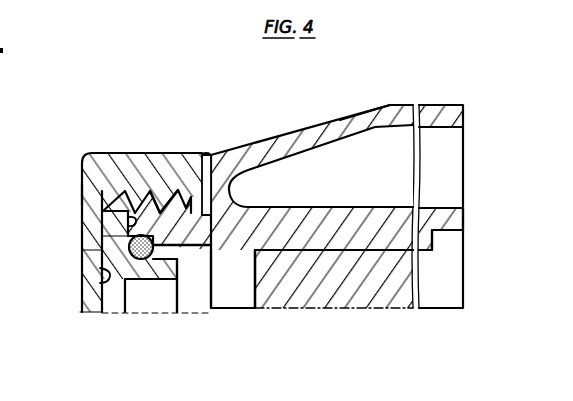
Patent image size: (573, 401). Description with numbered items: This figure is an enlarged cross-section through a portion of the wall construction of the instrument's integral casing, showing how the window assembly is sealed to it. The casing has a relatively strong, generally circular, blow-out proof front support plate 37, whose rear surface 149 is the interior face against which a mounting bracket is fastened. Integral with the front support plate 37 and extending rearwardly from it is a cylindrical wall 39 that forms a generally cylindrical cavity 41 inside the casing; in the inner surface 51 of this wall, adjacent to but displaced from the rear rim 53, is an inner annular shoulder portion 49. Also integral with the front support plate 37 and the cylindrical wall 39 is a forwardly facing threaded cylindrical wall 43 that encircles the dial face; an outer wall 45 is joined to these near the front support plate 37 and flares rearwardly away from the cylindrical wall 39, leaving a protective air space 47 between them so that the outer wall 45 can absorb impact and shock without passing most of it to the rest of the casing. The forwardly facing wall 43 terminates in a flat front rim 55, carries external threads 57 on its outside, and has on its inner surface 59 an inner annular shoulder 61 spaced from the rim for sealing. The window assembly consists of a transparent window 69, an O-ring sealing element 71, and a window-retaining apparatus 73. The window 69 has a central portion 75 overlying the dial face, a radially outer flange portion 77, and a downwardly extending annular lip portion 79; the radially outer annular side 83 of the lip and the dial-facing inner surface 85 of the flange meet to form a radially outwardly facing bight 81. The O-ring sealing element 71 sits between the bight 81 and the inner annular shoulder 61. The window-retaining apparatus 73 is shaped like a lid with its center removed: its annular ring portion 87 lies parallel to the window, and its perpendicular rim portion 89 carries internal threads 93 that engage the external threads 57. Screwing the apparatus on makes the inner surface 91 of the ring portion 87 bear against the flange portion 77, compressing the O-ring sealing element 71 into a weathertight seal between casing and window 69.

The front support plate 37 is at (272, 302).
The cylindrical wall 39 is at (305, 207).
The cavity 41 is at (364, 292).
The threaded cylindrical wall 43 is at (137, 190).
The outer wall 45 is at (360, 113).
The air space 47 is at (353, 183).
The inner annular shoulder portion 49 is at (432, 252).
The inner surface 51 is at (334, 271).
The rear rim 53 is at (461, 210).
The front rim 55 is at (103, 190).
The external threads 57 is at (166, 168).
The inner surface 59 is at (214, 306).
The inner annular shoulder 61 is at (150, 226).
The window 69 is at (90, 301).
The O-ring sealing element 71 is at (141, 260).
The window-retaining apparatus 73 is at (117, 234).
The central portion 75 is at (110, 313).
The flange portion 77 is at (100, 244).
The annular lip portion 79 is at (152, 262).
The bight 81 is at (100, 227).
The radially outer annular side 83 is at (193, 260).
The inner surface 85 is at (82, 197).
The annular ring portion 87 is at (90, 250).
The rim portion 89 is at (168, 180).
The inner surface 91 is at (100, 285).
The internal threads 93 is at (197, 160).
The rear surface 149 is at (260, 299).